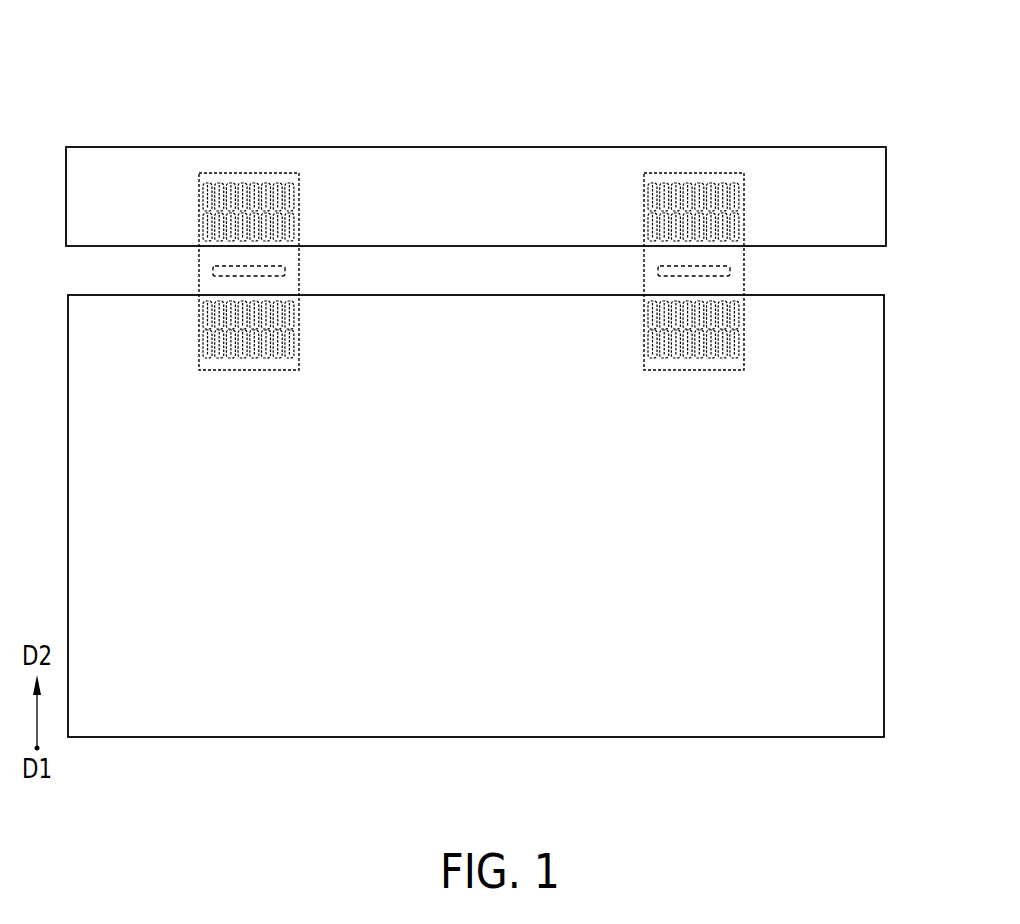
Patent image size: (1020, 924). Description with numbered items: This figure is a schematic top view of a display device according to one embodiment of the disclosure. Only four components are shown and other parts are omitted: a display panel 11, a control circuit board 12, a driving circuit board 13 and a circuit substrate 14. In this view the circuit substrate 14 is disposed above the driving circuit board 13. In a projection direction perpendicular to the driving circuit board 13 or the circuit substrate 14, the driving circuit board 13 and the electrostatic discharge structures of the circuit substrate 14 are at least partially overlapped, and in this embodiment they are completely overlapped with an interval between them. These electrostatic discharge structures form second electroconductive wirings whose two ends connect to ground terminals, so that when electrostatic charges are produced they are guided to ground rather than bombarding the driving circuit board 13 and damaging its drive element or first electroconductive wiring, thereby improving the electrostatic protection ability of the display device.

The display panel 11 is at (865, 375).
The control circuit board 12 is at (772, 160).
The driving circuit board 13 is at (297, 271).
The circuit substrate 14 is at (257, 180).